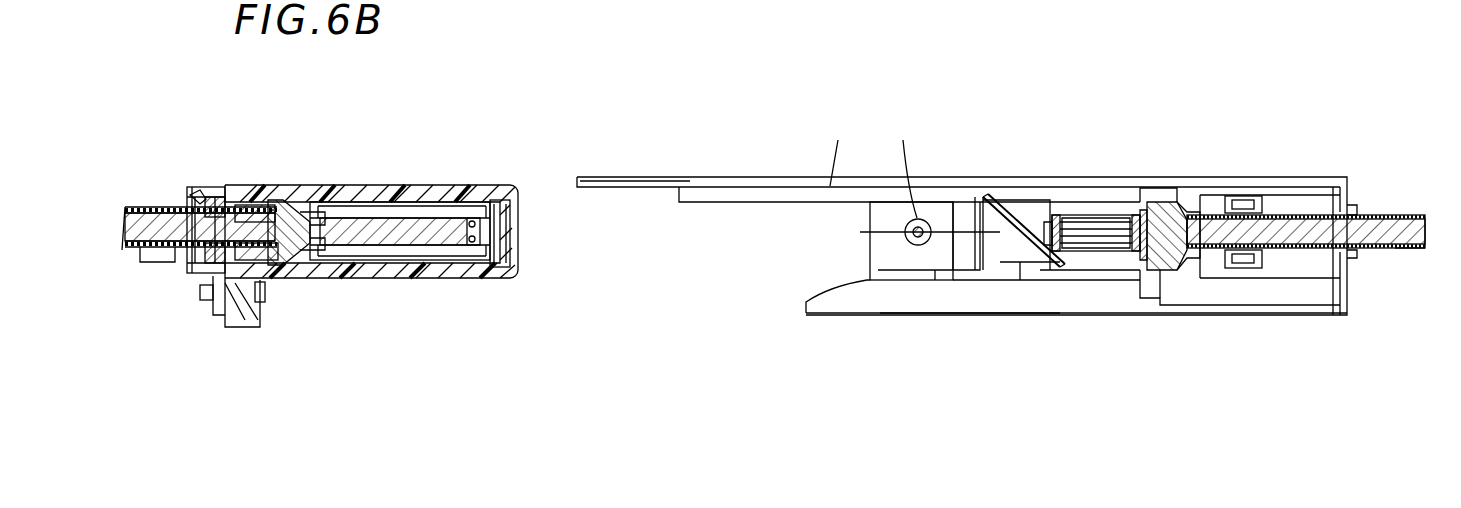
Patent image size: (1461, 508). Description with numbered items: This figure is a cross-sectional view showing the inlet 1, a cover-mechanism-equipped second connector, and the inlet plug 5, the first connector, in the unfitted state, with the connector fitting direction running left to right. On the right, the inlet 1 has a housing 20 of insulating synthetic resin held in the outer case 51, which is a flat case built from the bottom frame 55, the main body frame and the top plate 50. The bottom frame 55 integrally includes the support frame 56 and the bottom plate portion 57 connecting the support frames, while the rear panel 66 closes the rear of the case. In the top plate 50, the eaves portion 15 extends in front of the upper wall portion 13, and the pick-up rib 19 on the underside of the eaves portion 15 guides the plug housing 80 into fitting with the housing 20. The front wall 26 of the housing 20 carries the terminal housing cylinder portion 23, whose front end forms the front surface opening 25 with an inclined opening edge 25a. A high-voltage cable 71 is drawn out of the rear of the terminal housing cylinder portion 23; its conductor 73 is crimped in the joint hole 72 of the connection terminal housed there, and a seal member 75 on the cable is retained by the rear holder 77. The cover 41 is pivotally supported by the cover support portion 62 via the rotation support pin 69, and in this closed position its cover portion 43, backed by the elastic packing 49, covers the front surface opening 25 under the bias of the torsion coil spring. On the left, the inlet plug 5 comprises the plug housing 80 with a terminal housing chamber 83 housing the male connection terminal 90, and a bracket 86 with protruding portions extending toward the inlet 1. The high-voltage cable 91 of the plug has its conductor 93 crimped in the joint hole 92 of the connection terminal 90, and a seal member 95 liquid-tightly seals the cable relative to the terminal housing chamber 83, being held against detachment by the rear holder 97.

The inlet 1 is at (1173, 122).
The inlet plug 5 is at (384, 172).
The upper wall portion 13 is at (1313, 200).
The eaves portion 15 is at (632, 188).
The pick-up rib 19 is at (727, 204).
The housing 20 is at (1206, 300).
The terminal housing cylinder portion 23 is at (1116, 188).
The front surface opening 25 is at (1035, 203).
The opening edge 25a is at (1045, 268).
The front wall 26 is at (1132, 272).
The cover 41 is at (990, 243).
The cover portion 43 is at (1018, 262).
The elastic packing 49 is at (1047, 204).
The top plate 50 is at (668, 168).
The outer case 51 is at (1328, 162).
The bottom frame 55 is at (968, 328).
The support frame 56 is at (842, 315).
The bottom plate portion 57 is at (1287, 315).
The cover support portion 62 is at (855, 254).
The rear panel 66 is at (1350, 300).
The rotation support pin 69 is at (917, 248).
The high-voltage cable 71 is at (1401, 264).
The joint hole 72 is at (1210, 218).
The conductor 73 is at (1396, 214).
The seal member 75 is at (1241, 198).
The rear holder 77 is at (1268, 208).
The plug housing 80 is at (343, 290).
The terminal housing chamber 83 is at (476, 280).
The bracket 86 is at (195, 317).
The connection terminal 90 is at (436, 262).
The high-voltage cable 91 is at (138, 196).
The joint hole 92 is at (272, 232).
The conductor 93 is at (146, 250).
The seal member 95 is at (222, 195).
The rear holder 97 is at (172, 200).